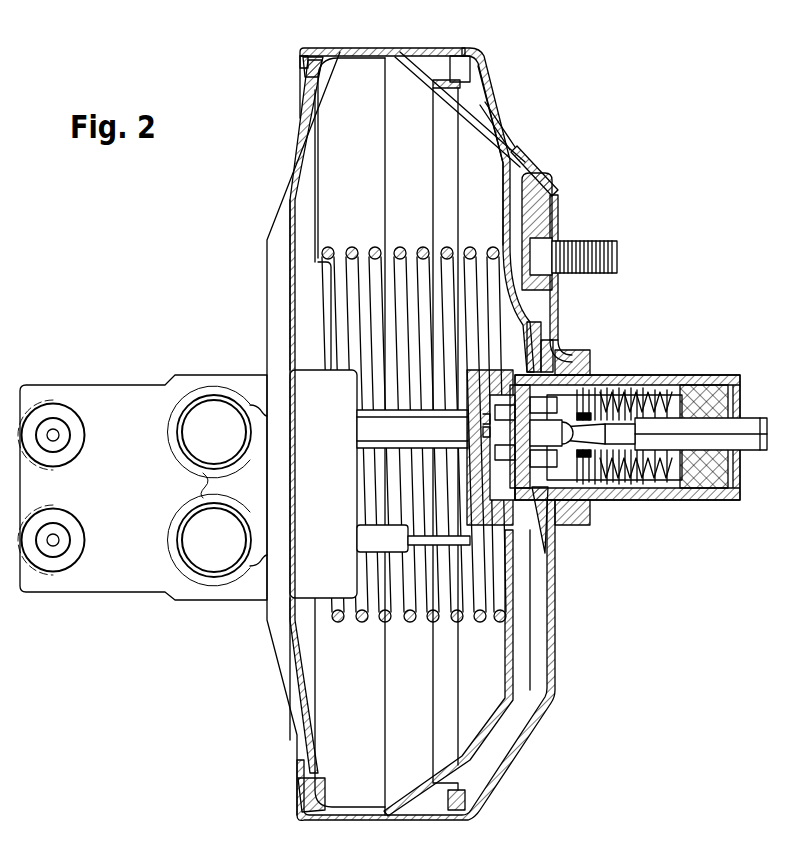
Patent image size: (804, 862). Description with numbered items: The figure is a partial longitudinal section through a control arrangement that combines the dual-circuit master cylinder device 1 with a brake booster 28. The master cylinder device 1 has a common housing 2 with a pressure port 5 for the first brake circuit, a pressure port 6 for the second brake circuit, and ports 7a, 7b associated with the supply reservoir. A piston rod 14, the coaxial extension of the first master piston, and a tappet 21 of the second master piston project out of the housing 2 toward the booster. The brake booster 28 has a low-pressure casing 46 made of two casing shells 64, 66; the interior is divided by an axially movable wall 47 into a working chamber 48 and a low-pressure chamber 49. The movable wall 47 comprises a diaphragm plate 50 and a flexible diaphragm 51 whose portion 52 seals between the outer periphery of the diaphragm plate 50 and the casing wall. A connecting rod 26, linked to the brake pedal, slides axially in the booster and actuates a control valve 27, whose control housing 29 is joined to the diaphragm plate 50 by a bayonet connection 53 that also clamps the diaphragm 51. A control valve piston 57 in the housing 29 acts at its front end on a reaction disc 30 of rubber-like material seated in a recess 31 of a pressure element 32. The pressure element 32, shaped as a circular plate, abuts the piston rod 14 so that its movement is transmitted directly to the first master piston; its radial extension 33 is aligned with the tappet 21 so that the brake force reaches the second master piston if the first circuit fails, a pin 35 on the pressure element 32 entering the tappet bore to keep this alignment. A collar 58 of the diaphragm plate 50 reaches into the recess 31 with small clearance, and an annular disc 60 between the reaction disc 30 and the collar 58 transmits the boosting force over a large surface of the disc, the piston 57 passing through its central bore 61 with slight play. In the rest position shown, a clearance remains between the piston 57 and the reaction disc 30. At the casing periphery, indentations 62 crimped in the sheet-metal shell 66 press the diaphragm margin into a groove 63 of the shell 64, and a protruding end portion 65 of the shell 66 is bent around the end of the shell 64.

The dual-circuit master cylinder device 1 is at (104, 378).
The housing 2 is at (142, 405).
The pressure port 5 is at (52, 426).
The pressure port 6 is at (52, 553).
The port 7a is at (208, 411).
The port 7b is at (208, 561).
The piston rod 14 is at (370, 426).
The tappet 21 is at (370, 534).
The connecting rod 26 is at (752, 440).
The control valve 27 is at (628, 507).
The brake booster 28 is at (489, 61).
The control housing 29 is at (552, 536).
The reaction disc 30 is at (536, 375).
The recess 31 is at (514, 357).
The pressure element 32 is at (500, 334).
The extension 33 is at (484, 621).
The pin 35 is at (422, 621).
The low-pressure casing 46 is at (385, 46).
The axially movable wall 47 is at (512, 147).
The working chamber 48 is at (521, 197).
The low-pressure chamber 49 is at (336, 163).
The diaphragm plate 50 is at (514, 163).
The flexible diaphragm 51 is at (491, 129).
The portion 52 is at (418, 60).
The bayonet connection 53 is at (519, 571).
The control valve piston 57 is at (601, 377).
The collar 58 is at (557, 524).
The annular disc 60 is at (482, 419).
The central bore 61 is at (483, 430).
The indentations 62 is at (314, 46).
The groove 63 is at (303, 67).
The casing shell 64 is at (298, 132).
The protruding end portion 65 is at (298, 47).
The casing shell 66 is at (489, 81).